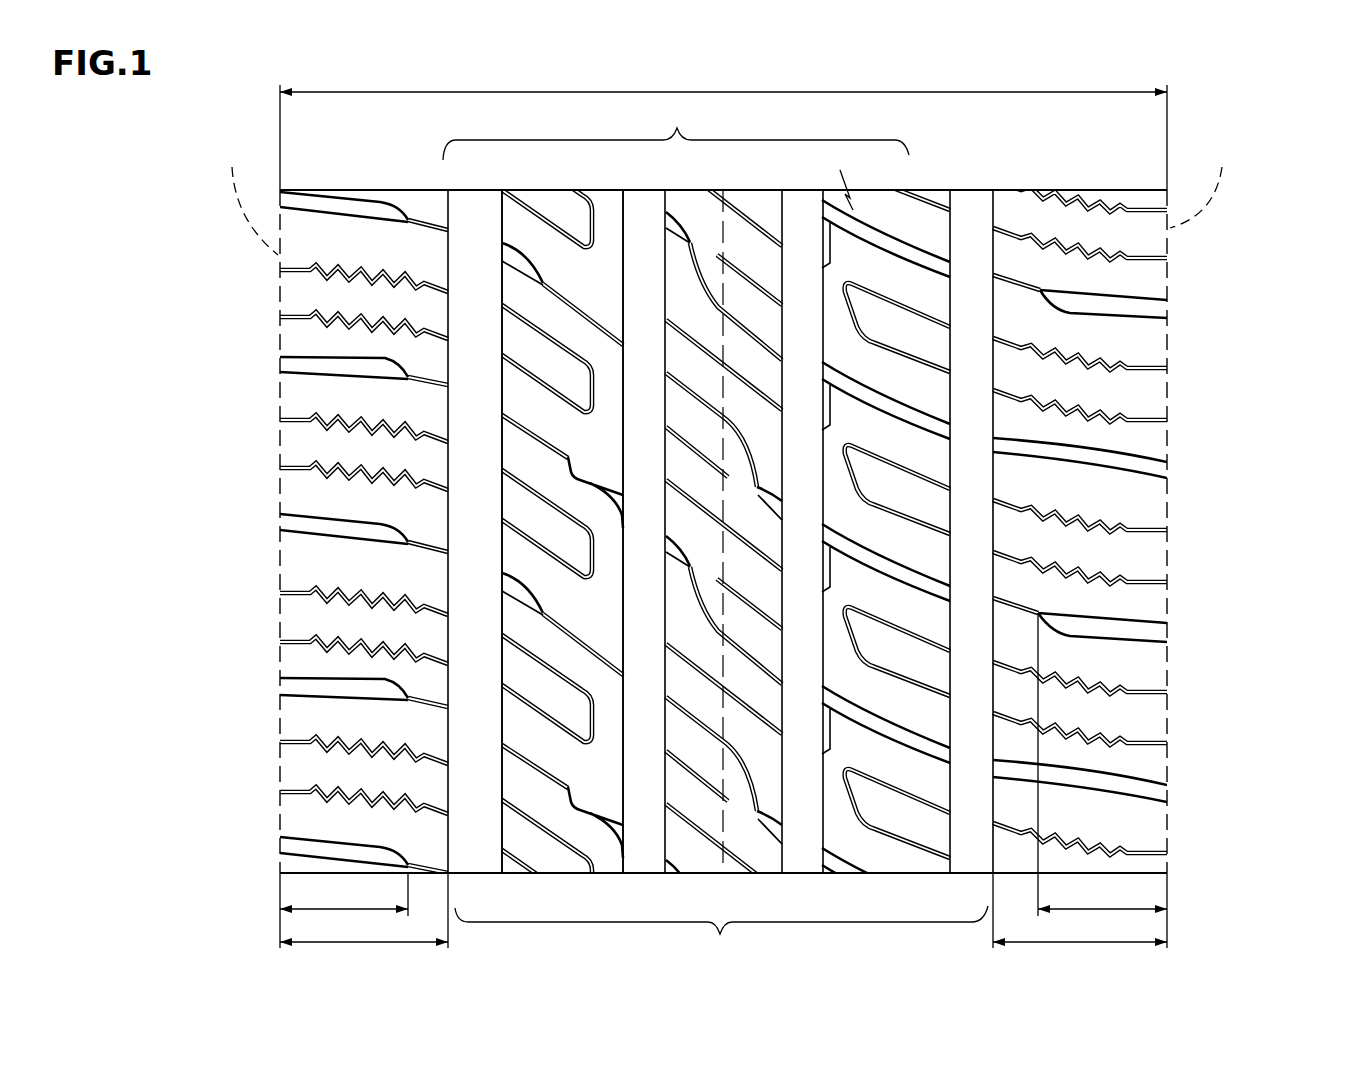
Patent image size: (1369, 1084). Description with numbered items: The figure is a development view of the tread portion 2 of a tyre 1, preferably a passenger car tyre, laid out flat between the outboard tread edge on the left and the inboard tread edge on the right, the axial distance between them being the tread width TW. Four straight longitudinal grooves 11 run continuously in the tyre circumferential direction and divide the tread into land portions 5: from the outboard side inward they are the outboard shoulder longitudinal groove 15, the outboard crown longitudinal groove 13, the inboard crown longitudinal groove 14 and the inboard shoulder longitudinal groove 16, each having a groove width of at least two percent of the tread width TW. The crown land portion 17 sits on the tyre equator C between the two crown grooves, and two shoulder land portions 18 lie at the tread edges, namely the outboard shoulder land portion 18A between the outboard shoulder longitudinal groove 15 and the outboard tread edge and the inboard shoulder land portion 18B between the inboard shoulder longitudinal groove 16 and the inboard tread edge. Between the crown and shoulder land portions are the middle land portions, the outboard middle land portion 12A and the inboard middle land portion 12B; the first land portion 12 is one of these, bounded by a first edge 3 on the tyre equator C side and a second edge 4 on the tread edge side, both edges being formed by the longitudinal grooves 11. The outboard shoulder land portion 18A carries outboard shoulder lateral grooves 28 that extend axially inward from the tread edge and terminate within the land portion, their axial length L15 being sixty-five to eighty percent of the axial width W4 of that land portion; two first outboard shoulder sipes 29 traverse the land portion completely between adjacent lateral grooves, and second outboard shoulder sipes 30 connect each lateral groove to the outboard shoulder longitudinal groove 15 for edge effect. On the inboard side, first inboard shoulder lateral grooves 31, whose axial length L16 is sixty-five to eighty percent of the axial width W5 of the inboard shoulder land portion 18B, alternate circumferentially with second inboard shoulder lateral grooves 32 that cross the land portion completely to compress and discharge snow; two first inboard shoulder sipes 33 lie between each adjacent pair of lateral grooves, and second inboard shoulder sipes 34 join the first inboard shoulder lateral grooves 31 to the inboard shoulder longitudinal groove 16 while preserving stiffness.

The tyre 1 is at (1308, 152).
The tread portion 2 is at (1033, 157).
The first edge 3 is at (625, 242).
The second edge 4 is at (500, 237).
The land portions 5 is at (721, 937).
The longitudinal grooves 11 is at (676, 129).
The first land portion 12 is at (726, 523).
The outboard middle land portion 12A is at (598, 843).
The inboard middle land portion 12B is at (877, 838).
The outboard crown longitudinal groove 13 is at (657, 253).
The inboard crown longitudinal groove 14 is at (803, 218).
The outboard shoulder longitudinal groove 15 is at (467, 253).
The inboard shoulder longitudinal groove 16 is at (970, 213).
The crown land portion 17 is at (748, 837).
The shoulder land portions 18 is at (707, 546).
The outboard shoulder land portion 18A is at (367, 552).
The inboard shoulder land portion 18B is at (1058, 544).
The outboard shoulder lateral grooves 28 is at (360, 848).
The first outboard shoulder sipes 29 is at (353, 467).
The second outboard shoulder sipes 30 is at (432, 553).
The first inboard shoulder lateral grooves 31 is at (1110, 627).
The second inboard shoulder lateral grooves 32 is at (1101, 465).
The first inboard shoulder sipes 33 is at (1085, 412).
The second inboard shoulder sipes 34 is at (1021, 285).
The tyre equator C is at (722, 513).
The tread width TW is at (723, 127).
The axial length of outboard shoulder lateral grooves L15 is at (344, 894).
The axial width of outboard shoulder land portion W4 is at (364, 910).
The axial length of first inboard shoulder lateral grooves L16 is at (1102, 764).
The axial width of inboard shoulder land portion W5 is at (1080, 910).